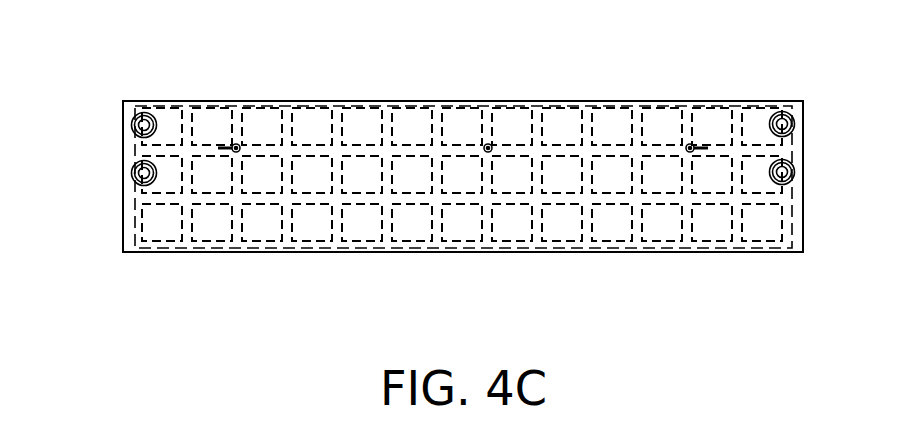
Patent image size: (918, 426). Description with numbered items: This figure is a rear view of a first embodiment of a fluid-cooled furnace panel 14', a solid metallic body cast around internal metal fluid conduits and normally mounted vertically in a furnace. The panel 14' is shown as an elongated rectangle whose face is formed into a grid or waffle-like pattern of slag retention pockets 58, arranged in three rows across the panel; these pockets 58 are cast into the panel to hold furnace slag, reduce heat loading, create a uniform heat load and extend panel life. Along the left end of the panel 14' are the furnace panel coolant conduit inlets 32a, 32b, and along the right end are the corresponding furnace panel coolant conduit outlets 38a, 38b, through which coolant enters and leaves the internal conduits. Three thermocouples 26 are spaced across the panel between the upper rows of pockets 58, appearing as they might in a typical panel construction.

The furnace panel 14' is at (463, 212).
The thermocouple 26 is at (236, 144).
The furnace panel coolant conduit inlet 32a is at (131, 125).
The furnace panel coolant conduit inlet 32b is at (131, 173).
The furnace panel coolant conduit outlet 38a is at (795, 124).
The furnace panel coolant conduit outlet 38b is at (795, 172).
The slag retention pocket 58 is at (312, 229).